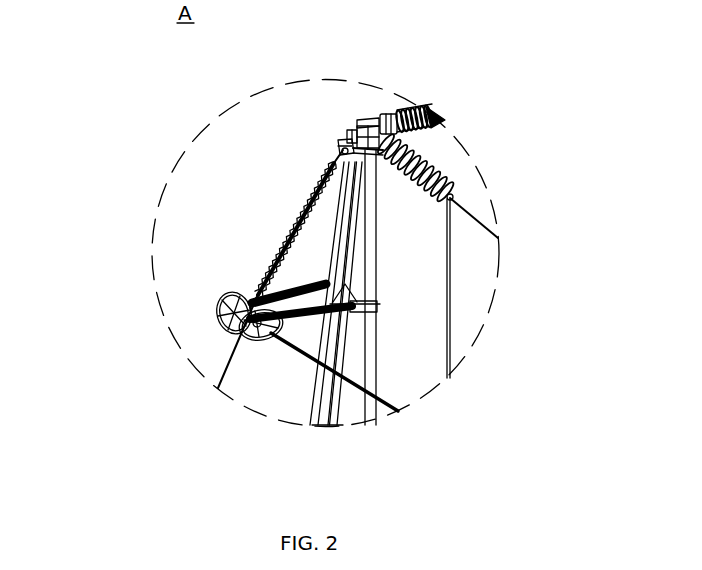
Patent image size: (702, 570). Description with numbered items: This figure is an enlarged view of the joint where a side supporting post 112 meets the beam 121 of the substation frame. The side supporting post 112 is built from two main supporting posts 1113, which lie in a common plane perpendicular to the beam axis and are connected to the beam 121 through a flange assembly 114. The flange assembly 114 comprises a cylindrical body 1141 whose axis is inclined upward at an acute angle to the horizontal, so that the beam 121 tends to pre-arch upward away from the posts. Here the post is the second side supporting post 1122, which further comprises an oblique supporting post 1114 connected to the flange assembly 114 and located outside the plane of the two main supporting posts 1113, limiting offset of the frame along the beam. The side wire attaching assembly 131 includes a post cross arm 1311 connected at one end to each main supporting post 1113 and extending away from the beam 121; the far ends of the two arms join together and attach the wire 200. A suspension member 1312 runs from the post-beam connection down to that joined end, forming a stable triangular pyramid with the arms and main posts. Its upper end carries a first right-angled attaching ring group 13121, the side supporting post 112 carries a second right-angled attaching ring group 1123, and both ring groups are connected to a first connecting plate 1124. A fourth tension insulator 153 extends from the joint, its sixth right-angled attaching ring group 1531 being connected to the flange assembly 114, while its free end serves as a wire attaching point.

The side wire attaching assembly 131 is at (277, 172).
The suspension member 1312 is at (298, 222).
The first right-angled attaching ring group 13121 is at (343, 146).
The post cross arm 1311 is at (237, 293).
The first connecting plate 1124 is at (345, 142).
The flange assembly 114 is at (368, 119).
The second right-angled attaching ring group 1123 is at (348, 140).
The cylindrical body 1141 is at (381, 118).
The beam 121 is at (417, 107).
The fourth tension insulator 153 is at (420, 165).
The sixth right-angled attaching ring group 1531 is at (440, 130).
The wire 200 is at (230, 385).
The side supporting post 112 is at (370, 425).
The second side supporting post 1122 is at (279, 373).
The oblique supporting post 1114 is at (293, 392).
The main supporting post 1113 is at (335, 396).